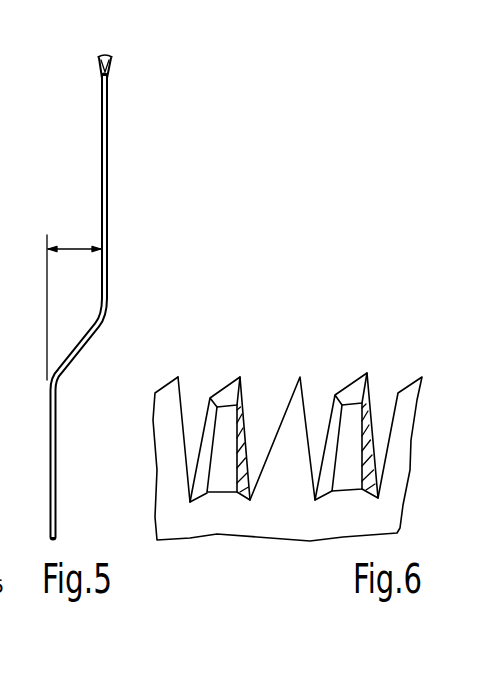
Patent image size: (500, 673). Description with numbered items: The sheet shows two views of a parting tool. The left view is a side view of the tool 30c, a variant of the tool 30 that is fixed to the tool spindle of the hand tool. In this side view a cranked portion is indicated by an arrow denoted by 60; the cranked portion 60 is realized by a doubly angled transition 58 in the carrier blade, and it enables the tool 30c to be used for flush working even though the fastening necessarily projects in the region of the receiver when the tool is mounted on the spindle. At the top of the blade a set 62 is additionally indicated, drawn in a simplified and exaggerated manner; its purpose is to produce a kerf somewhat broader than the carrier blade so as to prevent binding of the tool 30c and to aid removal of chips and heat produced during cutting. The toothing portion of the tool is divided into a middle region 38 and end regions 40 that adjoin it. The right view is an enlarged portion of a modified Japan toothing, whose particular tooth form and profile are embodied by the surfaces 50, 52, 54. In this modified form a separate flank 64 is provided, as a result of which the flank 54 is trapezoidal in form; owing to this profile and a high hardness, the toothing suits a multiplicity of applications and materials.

In FIG. 6, the tool 30 is at (213, 539).
In FIG. 5, the tool 30c is at (0, 163).
In FIG. 6, the middle region 38 is at (240, 376).
In FIG. 5, the end regions 40 is at (0, 32).
In FIG. 6, the surface 50 is at (336, 422).
In FIG. 6, the surface 52 is at (375, 395).
In FIG. 6, the flank 54 is at (353, 384).
In FIG. 5, the doubly angled transition 58 is at (79, 349).
In FIG. 5, the cranked portion 60 is at (74, 248).
In FIG. 5, the set 62 is at (112, 63).
In FIG. 6, the separate flank 64 is at (348, 468).